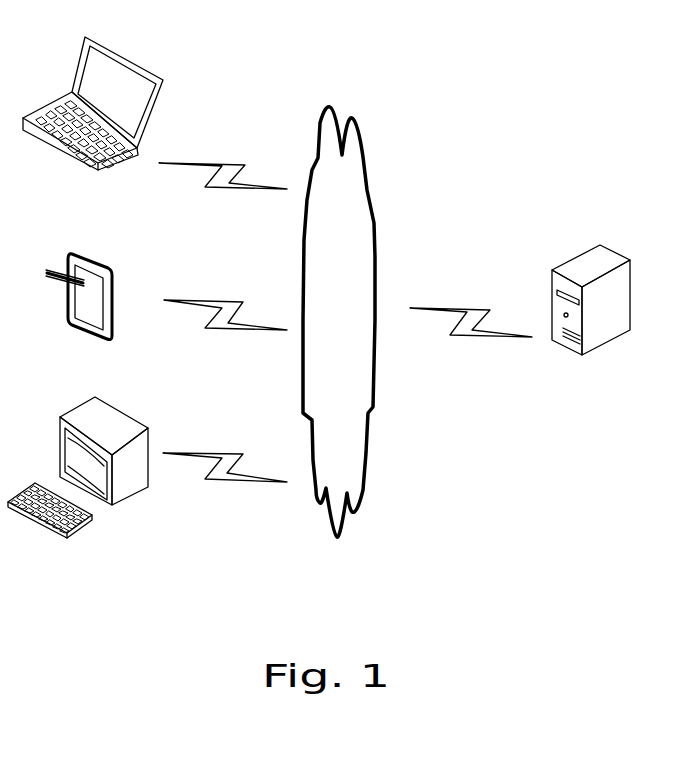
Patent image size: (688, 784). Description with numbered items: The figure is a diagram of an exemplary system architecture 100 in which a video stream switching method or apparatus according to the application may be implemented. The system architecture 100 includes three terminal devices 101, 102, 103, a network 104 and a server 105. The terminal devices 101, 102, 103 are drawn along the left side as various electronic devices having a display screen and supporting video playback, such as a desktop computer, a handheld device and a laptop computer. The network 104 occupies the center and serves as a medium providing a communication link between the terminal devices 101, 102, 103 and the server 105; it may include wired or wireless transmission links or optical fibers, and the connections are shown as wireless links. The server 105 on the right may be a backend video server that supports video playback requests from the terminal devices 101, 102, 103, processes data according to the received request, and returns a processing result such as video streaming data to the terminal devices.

The system architecture 100 is at (555, 30).
The terminal device 101 is at (78, 486).
The terminal device 102 is at (79, 315).
The terminal device 103 is at (93, 121).
The network 104 is at (339, 322).
The server 105 is at (591, 319).